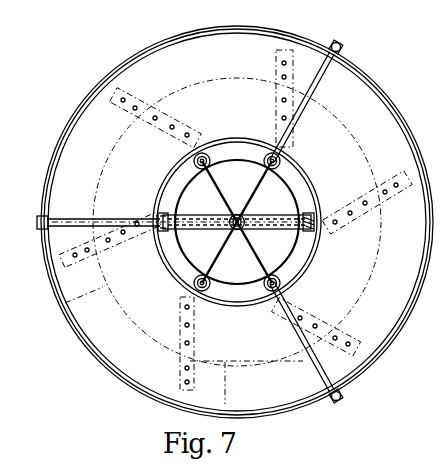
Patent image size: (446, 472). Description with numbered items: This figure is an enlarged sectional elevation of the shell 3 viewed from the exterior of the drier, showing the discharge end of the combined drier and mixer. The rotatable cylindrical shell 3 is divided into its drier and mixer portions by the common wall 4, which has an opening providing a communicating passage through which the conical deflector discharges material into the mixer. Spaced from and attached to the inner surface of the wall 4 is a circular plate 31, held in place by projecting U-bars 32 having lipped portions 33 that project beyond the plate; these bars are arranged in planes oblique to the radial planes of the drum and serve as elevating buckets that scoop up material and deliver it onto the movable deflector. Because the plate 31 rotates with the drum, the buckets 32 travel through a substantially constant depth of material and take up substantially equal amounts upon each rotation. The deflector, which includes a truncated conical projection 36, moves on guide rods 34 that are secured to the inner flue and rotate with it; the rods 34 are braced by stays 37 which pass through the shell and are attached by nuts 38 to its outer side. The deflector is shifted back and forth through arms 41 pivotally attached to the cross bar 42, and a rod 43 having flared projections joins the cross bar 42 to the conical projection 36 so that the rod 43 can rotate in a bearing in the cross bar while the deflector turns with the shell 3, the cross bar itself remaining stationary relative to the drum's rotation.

The rotatable cylindrical shell 3 is at (66, 136).
The wall 4 is at (237, 184).
The circular plate 31 is at (152, 333).
The U-bars 32 is at (88, 251).
The lipped portions 33 is at (184, 343).
The guide rods 34 is at (206, 158).
The truncated conical projection 36 is at (215, 209).
The stays 37 is at (75, 220).
The nuts 38 is at (341, 404).
The arms 41 is at (161, 215).
The cross bar 42 is at (201, 229).
The rod 43 is at (238, 231).